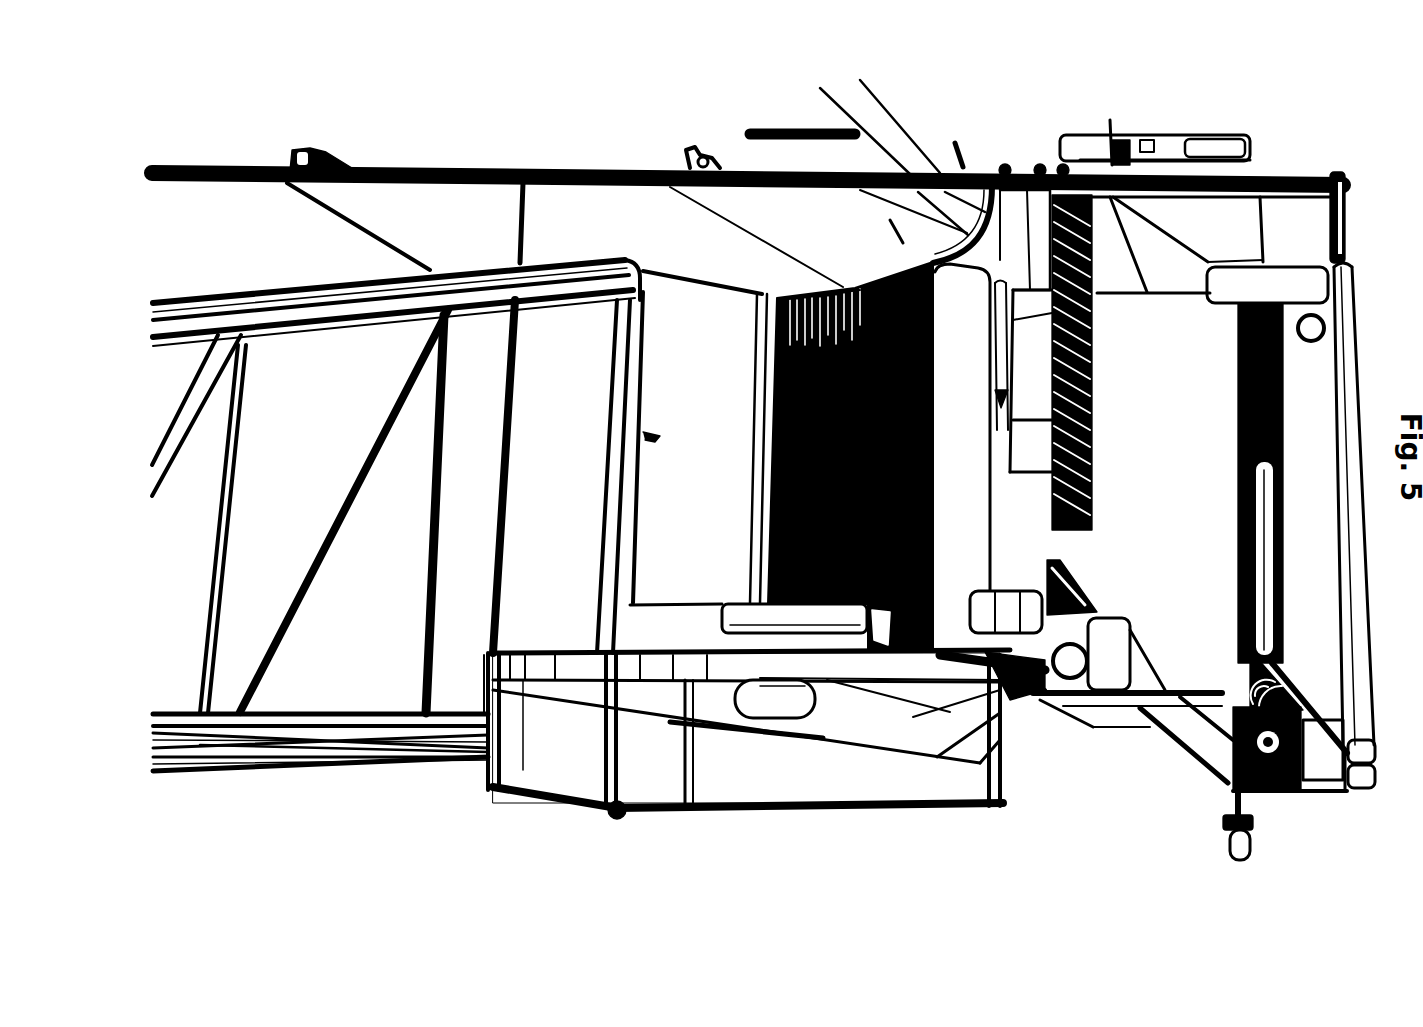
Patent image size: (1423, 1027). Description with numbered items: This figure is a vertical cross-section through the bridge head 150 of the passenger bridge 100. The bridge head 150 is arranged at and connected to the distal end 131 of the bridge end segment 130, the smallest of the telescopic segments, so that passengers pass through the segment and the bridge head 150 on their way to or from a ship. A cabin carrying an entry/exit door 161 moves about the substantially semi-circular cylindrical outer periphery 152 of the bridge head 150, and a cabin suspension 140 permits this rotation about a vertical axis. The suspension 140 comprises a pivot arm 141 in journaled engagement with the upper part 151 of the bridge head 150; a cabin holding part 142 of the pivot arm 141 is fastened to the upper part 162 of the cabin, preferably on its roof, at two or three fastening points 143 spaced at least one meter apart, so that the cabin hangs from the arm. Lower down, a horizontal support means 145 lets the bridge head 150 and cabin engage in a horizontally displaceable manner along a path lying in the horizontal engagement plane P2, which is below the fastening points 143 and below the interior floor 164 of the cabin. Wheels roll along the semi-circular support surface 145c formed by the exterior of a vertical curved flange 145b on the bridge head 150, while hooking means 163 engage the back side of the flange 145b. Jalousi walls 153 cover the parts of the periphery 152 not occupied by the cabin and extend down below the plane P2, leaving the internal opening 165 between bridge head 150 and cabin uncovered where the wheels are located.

The passenger bridge 100 is at (476, 876).
The bridge end segment 130 is at (302, 774).
The distal end of the bridge end segment 131 is at (473, 774).
The cabin suspension 140 is at (843, 818).
The pivot arm 141 is at (746, 735).
The cabin holding part 142 is at (995, 745).
The fastening points 143 is at (1025, 716).
The bridge head 150 is at (890, 717).
The upper part of the bridge head 151 is at (880, 697).
The outer periphery of the bridge head 152 is at (873, 173).
The jalousi walls 153 is at (810, 298).
The horizontal support means 145 is at (940, 117).
The curved flange 145b is at (987, 165).
The semi-circular support surface 145c is at (1000, 170).
The internal opening 165 is at (902, 119).
The hooking means 163 is at (1027, 173).
The interior floor of the cabin 164 is at (1024, 240).
The entry/exit door 161 is at (1100, 413).
The upper part of the cabin 162 is at (1133, 738).
The horizontal engagement plane P2 is at (985, 168).